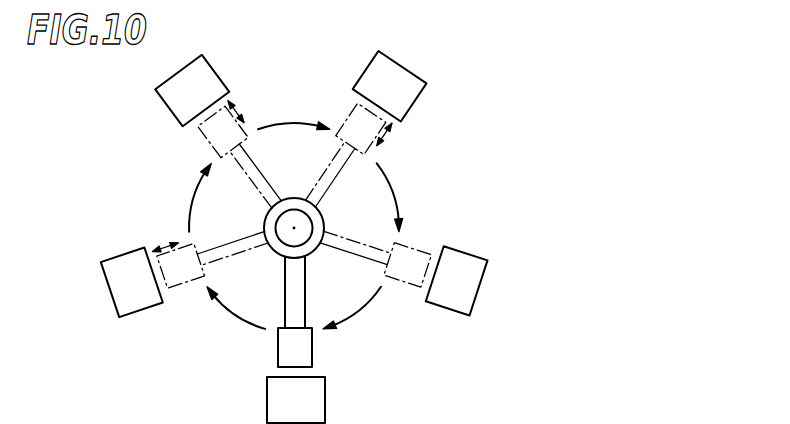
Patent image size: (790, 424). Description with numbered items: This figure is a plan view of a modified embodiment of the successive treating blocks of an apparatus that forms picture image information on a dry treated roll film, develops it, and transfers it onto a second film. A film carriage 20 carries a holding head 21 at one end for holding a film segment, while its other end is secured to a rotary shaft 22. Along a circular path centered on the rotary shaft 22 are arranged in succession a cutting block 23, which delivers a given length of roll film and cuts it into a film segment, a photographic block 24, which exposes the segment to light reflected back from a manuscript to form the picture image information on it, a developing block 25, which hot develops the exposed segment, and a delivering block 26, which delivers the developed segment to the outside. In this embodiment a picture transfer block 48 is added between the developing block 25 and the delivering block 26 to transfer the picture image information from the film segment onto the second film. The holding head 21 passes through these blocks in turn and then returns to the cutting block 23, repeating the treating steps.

The film carriage 20 is at (300, 287).
The holding head 21 is at (302, 350).
The rotary shaft 22 is at (305, 225).
The cutting block 23 is at (315, 403).
The photographic block 24 is at (148, 297).
The developing block 25 is at (213, 85).
The delivering block 26 is at (453, 258).
The picture transfer block 48 is at (372, 73).